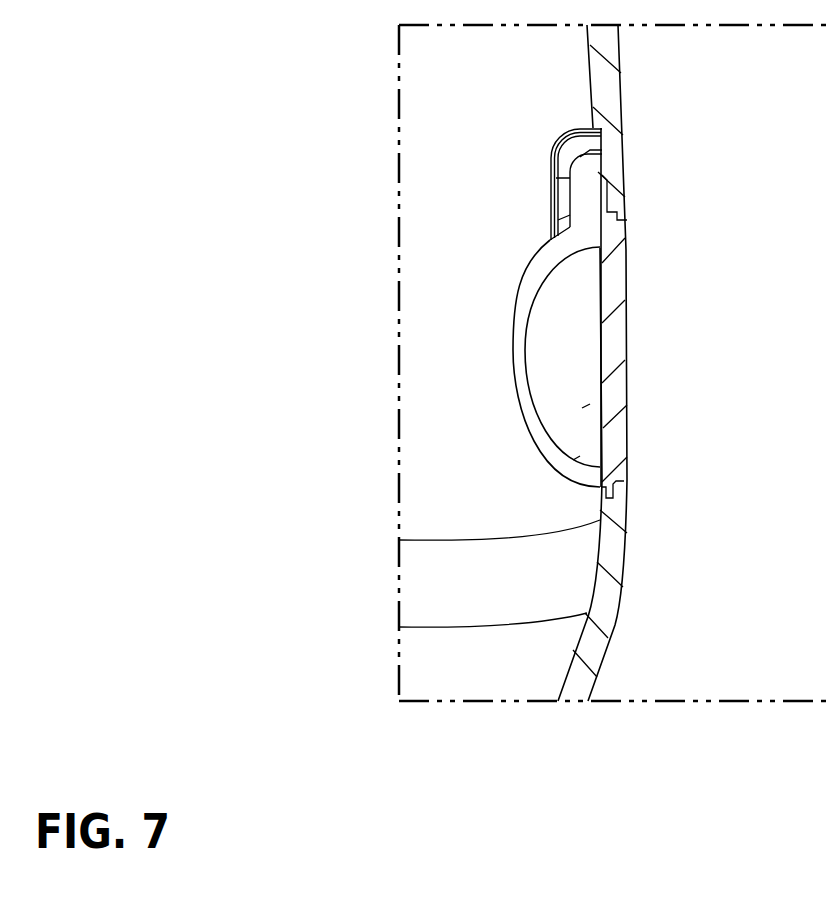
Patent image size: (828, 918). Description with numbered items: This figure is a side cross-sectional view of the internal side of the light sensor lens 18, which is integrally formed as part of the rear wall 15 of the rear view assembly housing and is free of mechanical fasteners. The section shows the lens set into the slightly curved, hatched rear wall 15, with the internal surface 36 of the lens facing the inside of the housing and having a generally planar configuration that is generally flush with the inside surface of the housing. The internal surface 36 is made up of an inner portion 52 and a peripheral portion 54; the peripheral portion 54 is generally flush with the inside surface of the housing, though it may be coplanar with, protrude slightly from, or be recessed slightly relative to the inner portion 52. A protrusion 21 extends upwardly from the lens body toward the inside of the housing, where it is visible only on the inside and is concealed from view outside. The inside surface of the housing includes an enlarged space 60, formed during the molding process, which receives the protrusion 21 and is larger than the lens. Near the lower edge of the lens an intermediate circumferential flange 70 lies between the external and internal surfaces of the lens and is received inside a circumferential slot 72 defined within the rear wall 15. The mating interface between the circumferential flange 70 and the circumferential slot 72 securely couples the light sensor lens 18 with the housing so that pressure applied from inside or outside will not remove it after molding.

The rear wall 15 is at (590, 645).
The light sensor lens 18 is at (578, 302).
The protrusion 21 is at (605, 188).
The internal surface 36 is at (572, 361).
The inner portion 52 is at (582, 408).
The peripheral portion 54 is at (573, 460).
The enlarged space 60 is at (600, 142).
The circumferential flange 70 is at (617, 497).
The circumferential slot 72 is at (616, 490).